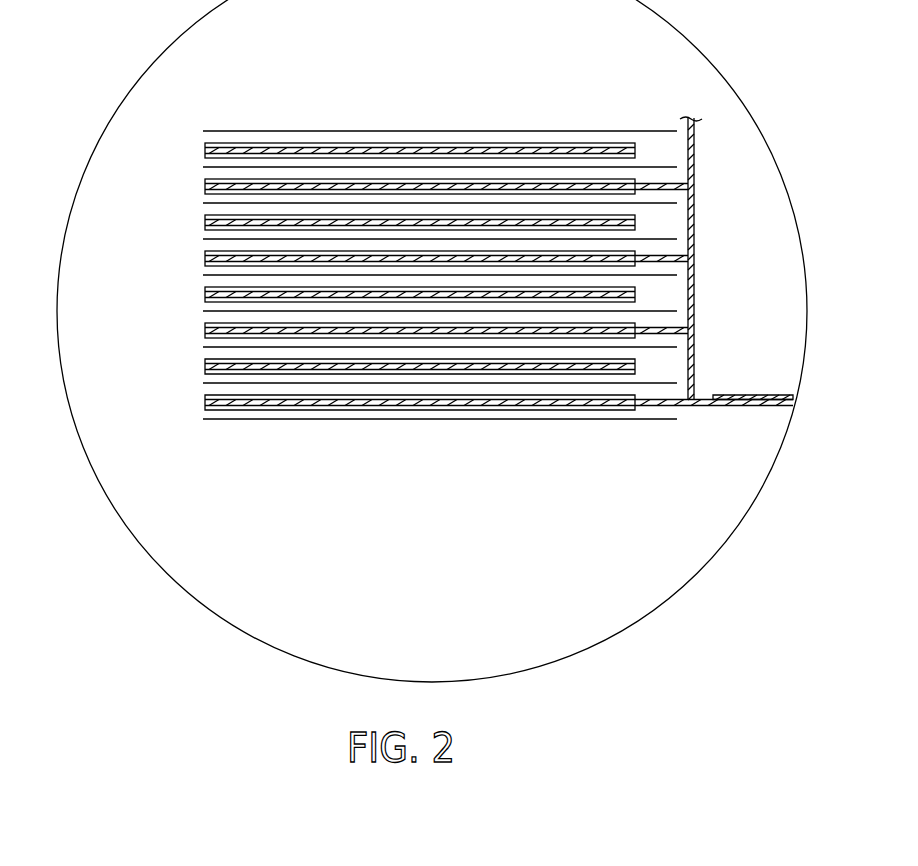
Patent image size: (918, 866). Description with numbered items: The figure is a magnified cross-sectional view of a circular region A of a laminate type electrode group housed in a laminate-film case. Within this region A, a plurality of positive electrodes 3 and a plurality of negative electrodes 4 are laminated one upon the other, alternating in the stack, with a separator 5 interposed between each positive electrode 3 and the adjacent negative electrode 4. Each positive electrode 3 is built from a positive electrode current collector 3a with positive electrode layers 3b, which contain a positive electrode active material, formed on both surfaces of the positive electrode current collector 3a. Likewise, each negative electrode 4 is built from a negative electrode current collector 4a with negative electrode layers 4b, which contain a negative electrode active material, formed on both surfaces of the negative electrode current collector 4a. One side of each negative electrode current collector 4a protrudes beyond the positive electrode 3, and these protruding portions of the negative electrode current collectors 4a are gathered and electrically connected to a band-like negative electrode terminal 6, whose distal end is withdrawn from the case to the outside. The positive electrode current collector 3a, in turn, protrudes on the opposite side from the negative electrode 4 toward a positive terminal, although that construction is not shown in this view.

The positive electrode 3 is at (352, 280).
The positive electrode current collector 3a is at (206, 366).
The positive electrode layer 3b is at (205, 359).
The negative electrode 4 is at (453, 320).
The negative electrode current collector 4a is at (665, 186).
The negative electrode layer 4b is at (203, 395).
The separator 5 is at (503, 129).
The negative electrode terminal 6 is at (760, 395).
The circular region A is at (687, 583).